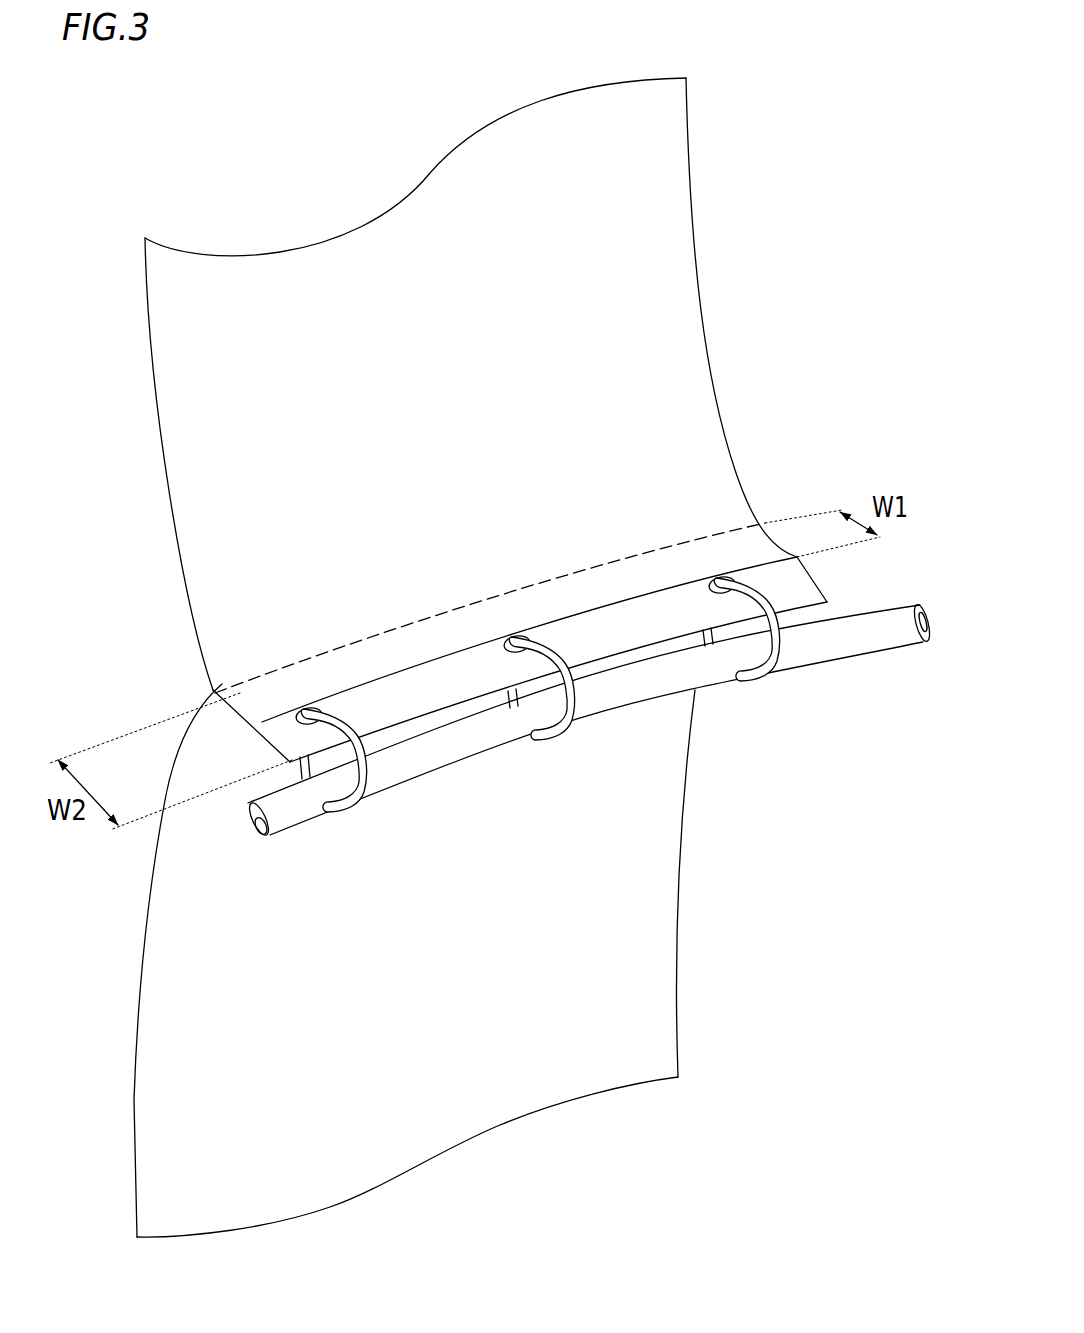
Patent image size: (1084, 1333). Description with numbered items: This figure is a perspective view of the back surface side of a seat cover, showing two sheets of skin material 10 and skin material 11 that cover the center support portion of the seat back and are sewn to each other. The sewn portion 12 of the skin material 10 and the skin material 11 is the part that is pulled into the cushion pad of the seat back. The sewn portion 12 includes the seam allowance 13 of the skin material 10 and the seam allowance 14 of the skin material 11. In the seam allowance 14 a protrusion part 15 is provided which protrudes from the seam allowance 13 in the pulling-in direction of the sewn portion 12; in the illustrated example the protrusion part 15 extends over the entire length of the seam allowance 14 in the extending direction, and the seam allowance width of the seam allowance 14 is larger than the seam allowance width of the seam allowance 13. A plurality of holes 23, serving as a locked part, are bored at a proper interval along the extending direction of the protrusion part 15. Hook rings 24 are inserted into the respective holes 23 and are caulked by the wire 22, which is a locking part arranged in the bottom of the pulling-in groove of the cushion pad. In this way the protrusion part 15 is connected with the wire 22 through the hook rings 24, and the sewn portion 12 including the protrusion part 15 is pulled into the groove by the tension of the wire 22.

The skin material 10 is at (380, 233).
The skin material 11 is at (435, 1125).
The sewn portion 12 is at (207, 690).
The seam allowance 13 is at (782, 556).
The seam allowance 14 is at (275, 745).
The protrusion part 15 is at (797, 582).
The wire 22 is at (878, 635).
The holes 23 is at (513, 637).
The hook rings 24 is at (340, 812).